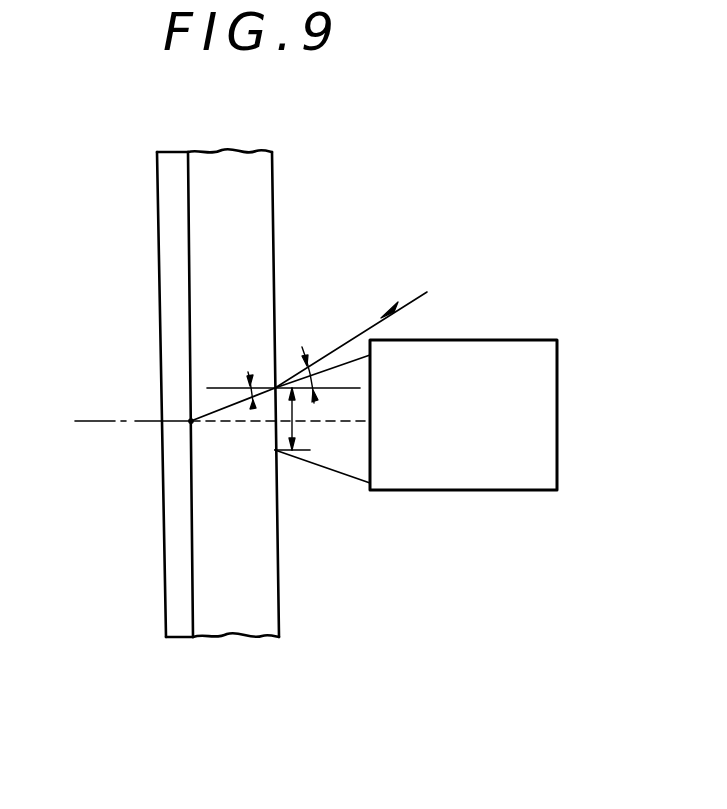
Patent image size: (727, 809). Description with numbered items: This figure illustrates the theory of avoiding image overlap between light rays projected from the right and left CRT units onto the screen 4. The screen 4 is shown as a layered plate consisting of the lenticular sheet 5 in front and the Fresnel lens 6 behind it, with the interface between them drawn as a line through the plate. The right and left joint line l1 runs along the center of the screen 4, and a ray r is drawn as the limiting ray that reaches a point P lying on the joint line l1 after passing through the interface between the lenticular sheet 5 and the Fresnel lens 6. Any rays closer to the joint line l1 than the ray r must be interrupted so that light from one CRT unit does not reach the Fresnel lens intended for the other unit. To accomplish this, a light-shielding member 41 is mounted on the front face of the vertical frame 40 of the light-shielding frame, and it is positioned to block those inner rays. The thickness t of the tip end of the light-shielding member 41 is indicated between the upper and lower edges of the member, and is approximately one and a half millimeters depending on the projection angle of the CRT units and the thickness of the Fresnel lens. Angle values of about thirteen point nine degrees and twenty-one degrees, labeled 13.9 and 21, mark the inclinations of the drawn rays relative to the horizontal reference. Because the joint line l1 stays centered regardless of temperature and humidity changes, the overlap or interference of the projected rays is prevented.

The screen 4 is at (170, 650).
The lenticular sheet 5 is at (186, 632).
The Fresnel lens 6 is at (247, 628).
The right and left joint line l1 is at (178, 425).
The point P is at (195, 425).
The ray r is at (355, 333).
The thickness t is at (294, 420).
The refraction angle 13.9 degrees 13.9 is at (226, 376).
The incidence angle 21 degrees 21 is at (305, 357).
The vertical frame 40 is at (484, 348).
The light-shielding member 41 is at (350, 470).